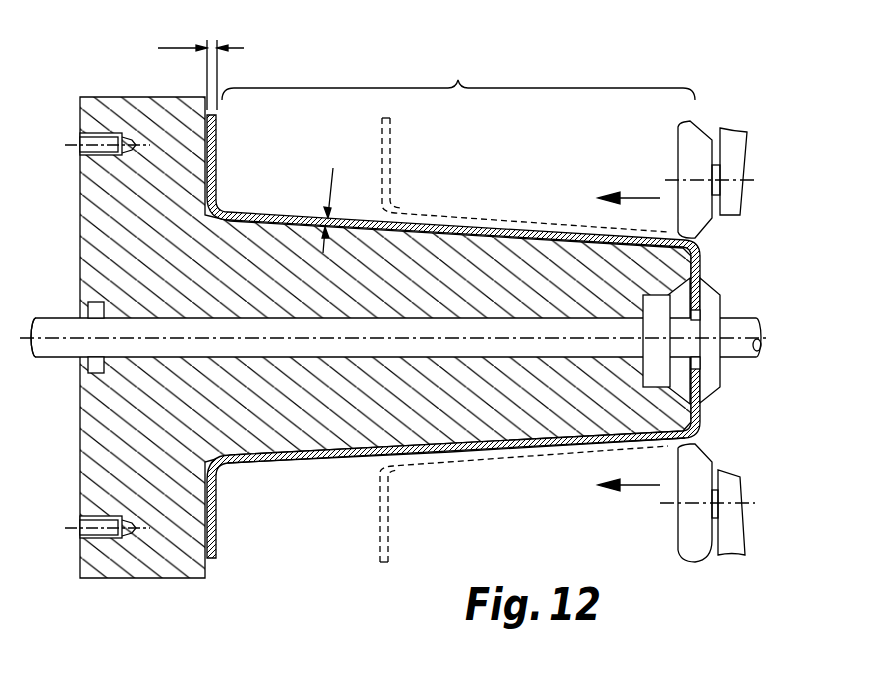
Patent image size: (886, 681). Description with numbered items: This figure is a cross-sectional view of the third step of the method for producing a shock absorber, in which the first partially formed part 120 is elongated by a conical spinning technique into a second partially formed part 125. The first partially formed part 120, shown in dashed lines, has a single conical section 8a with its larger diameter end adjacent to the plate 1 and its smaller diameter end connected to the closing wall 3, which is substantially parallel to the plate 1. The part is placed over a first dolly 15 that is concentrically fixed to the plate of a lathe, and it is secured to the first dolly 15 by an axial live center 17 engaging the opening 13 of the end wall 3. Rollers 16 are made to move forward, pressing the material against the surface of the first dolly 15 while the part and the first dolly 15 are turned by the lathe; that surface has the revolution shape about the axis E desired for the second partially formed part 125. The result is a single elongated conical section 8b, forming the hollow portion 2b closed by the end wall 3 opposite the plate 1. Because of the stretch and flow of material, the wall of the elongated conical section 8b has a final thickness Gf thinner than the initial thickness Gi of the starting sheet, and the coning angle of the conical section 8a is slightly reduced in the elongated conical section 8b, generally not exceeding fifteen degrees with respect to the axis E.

The plate 1 is at (218, 156).
The hollow portion 2b is at (458, 76).
The closing wall 3 is at (705, 293).
The single conical section 8a is at (468, 462).
The elongated conical section 8b is at (316, 464).
The opening of the end wall 13 is at (700, 358).
The first dolly 15 is at (515, 253).
The rollers 16 is at (698, 132).
The axial live center 17 is at (713, 308).
The partially formed part 120 is at (406, 164).
The second partially formed part 125 is at (350, 505).
The axis E is at (60, 330).
The initial thickness Gi is at (201, 63).
The final thickness Gf is at (311, 209).